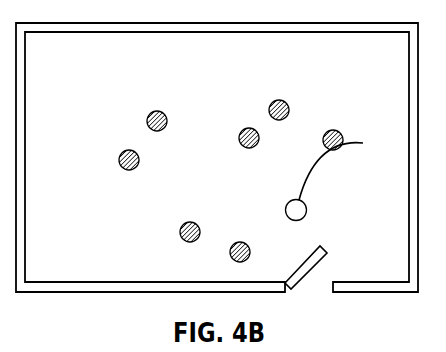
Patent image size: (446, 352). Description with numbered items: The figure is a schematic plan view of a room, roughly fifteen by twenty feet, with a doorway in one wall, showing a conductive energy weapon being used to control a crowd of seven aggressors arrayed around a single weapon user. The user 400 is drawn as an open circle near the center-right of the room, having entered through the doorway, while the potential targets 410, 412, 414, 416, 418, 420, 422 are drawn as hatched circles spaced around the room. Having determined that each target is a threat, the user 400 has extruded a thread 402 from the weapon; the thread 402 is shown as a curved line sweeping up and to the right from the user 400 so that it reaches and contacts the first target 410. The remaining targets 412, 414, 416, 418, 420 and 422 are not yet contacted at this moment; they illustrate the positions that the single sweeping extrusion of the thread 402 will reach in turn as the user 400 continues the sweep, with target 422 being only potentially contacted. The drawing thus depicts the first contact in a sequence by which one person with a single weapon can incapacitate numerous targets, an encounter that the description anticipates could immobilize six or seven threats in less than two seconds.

The user 400 is at (303, 200).
The thread 402 is at (301, 177).
The target 410 is at (338, 130).
The target 412 is at (278, 100).
The target 414 is at (248, 128).
The target 416 is at (156, 111).
The target 418 is at (129, 150).
The target 420 is at (189, 222).
The target 422 is at (238, 242).